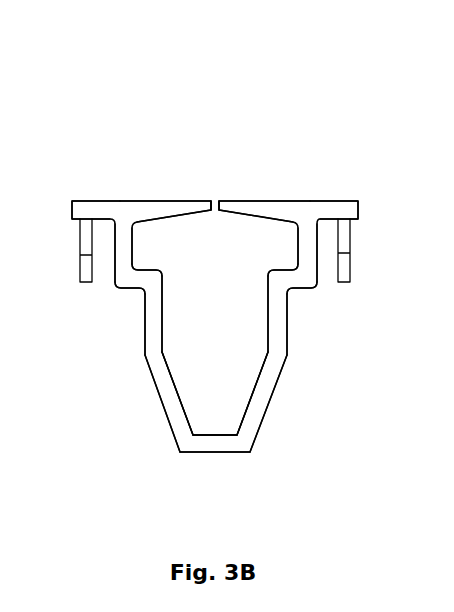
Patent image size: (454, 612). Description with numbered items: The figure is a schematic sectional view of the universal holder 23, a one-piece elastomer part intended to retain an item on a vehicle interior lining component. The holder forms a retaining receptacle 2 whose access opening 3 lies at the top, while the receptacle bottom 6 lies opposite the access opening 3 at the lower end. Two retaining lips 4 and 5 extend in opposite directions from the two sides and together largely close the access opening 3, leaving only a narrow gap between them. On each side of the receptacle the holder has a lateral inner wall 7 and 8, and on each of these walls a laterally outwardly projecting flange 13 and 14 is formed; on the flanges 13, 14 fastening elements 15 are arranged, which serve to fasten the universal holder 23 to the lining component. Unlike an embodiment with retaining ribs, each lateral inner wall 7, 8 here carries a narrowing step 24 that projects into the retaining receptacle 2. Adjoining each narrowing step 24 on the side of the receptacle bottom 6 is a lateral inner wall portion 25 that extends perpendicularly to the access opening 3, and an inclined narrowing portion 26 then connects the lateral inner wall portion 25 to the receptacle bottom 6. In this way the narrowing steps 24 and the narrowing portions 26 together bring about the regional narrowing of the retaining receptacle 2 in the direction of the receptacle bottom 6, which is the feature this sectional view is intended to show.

The universal holder 23 is at (188, 114).
The flange 13 is at (96, 201).
The flange 14 is at (327, 201).
The retaining lip 4 is at (173, 201).
The retaining lip 5 is at (249, 201).
The access opening 3 is at (213, 218).
The lateral inner wall 7 is at (115, 246).
The lateral inner wall 8 is at (310, 238).
The fastening element 15 is at (83, 266).
The narrowing step 24 is at (137, 281).
The lateral inner wall portion 25 is at (150, 305).
The narrowing portion 26 is at (173, 395).
The retaining receptacle 2 is at (205, 414).
The receptacle bottom 6 is at (223, 447).